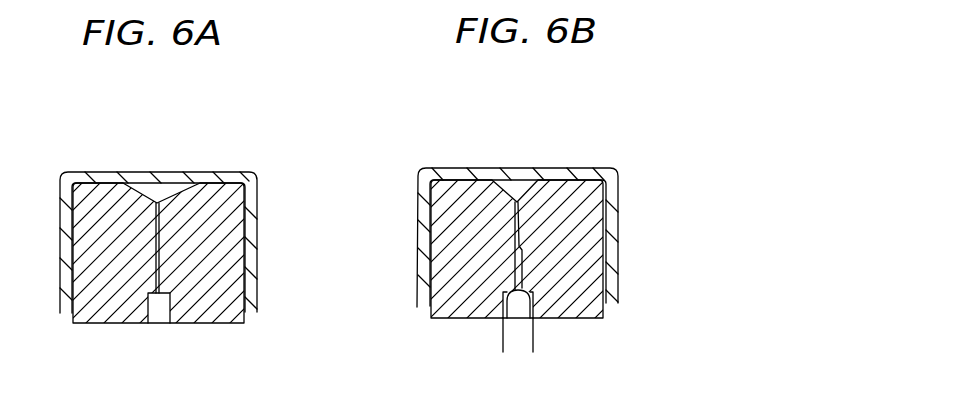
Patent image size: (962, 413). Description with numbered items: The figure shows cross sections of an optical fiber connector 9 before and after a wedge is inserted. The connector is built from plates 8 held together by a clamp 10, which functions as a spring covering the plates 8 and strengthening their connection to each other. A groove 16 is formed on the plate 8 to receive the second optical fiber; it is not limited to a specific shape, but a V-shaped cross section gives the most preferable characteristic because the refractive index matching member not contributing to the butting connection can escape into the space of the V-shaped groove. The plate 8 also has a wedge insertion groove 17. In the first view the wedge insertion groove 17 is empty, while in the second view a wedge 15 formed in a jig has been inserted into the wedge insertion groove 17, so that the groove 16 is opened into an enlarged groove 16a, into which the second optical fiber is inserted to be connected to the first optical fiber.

In FIG. 6A, the plate 8 is at (205, 212).
In FIG. 6A, the clamp 10 is at (248, 205).
In FIG. 6A, the groove 16 is at (161, 252).
In FIG. 6A, the wedge insertion groove 17 is at (158, 313).
In FIG. 6B, the optical fiber connector 9 is at (527, 141).
In FIG. 6B, the enlarged groove 16a is at (522, 250).
In FIG. 6B, the wedge 15 is at (522, 328).